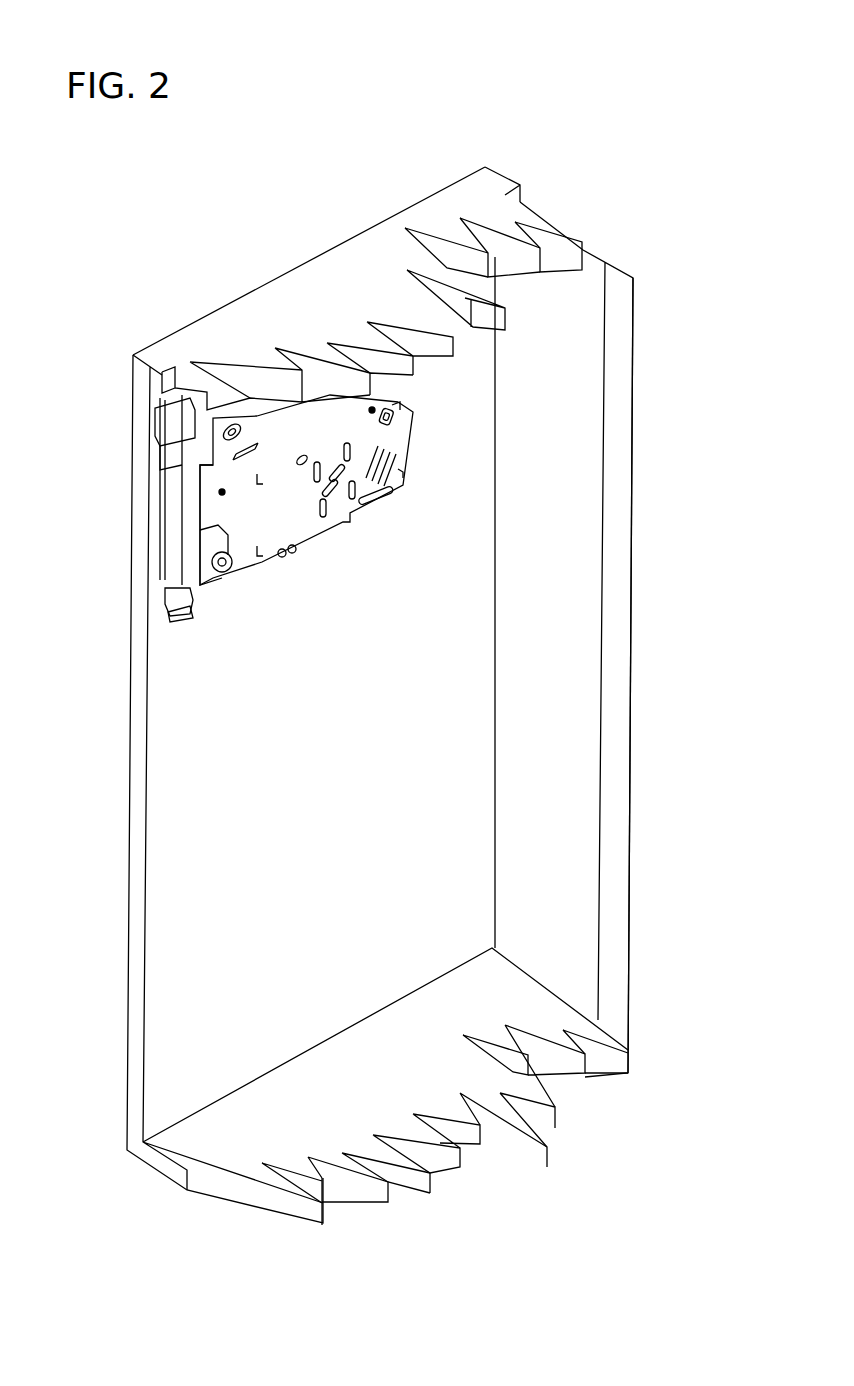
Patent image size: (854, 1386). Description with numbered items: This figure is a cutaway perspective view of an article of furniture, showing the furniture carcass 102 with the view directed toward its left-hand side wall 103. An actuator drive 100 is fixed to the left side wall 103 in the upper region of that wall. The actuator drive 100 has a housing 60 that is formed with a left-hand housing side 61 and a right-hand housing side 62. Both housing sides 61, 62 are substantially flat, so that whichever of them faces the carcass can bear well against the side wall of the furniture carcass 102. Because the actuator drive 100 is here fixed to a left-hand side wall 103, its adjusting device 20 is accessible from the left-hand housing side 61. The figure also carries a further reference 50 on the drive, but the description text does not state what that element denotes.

The actuator drive 100 is at (347, 418).
The furniture carcass 102 is at (570, 425).
The left-hand side wall 103 is at (388, 918).
The adjusting device 20 is at (387, 517).
The guide bracket 50 is at (165, 528).
The housing 60 is at (277, 503).
The left-hand housing side 61 is at (279, 622).
The right-hand housing side 62 is at (212, 592).